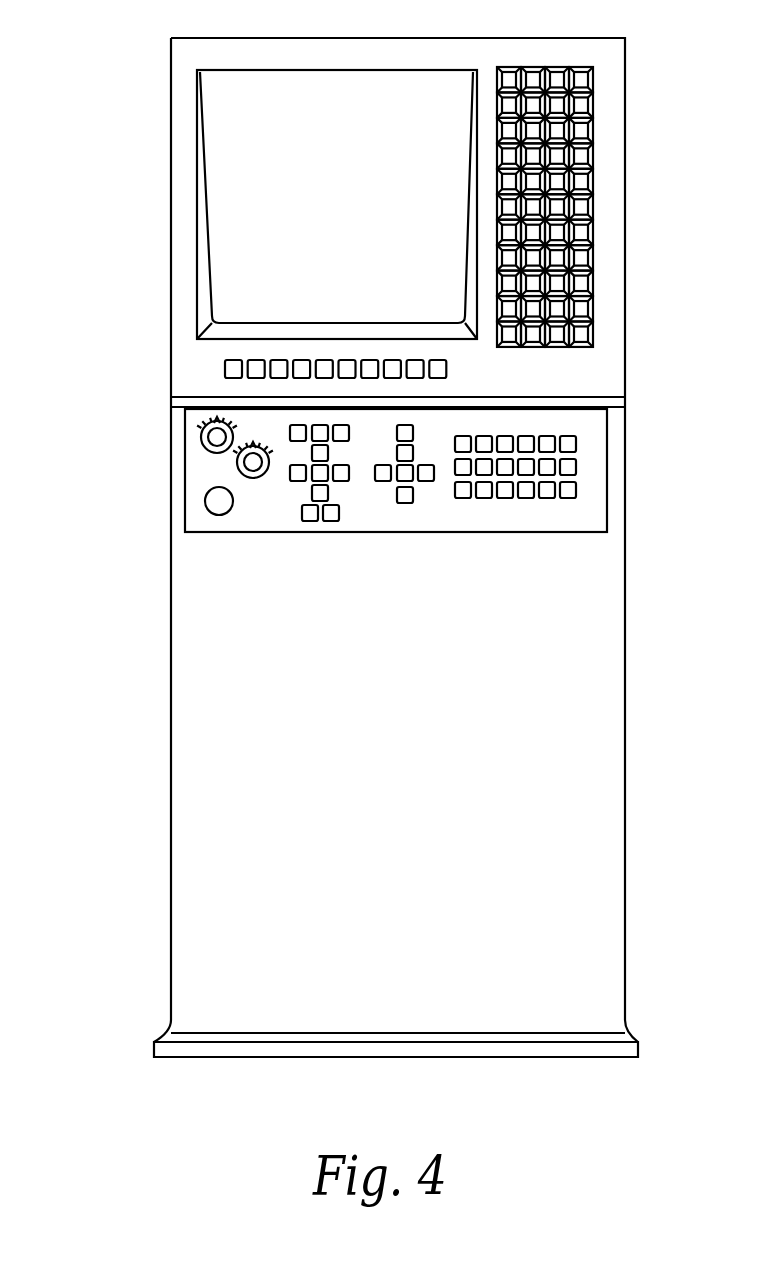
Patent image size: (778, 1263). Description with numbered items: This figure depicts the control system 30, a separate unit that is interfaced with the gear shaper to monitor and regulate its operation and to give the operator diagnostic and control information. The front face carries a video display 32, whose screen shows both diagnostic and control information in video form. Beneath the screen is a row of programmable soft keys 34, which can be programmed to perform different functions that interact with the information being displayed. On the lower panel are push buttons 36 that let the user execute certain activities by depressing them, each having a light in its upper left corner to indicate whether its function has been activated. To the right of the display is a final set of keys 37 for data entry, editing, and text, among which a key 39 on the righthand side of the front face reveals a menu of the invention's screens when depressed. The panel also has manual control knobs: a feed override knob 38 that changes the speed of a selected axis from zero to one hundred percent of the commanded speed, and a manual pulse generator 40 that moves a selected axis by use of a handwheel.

The control system 30 is at (118, 115).
The video display 32 is at (227, 225).
The soft keys 34 is at (223, 370).
The push buttons 36 is at (358, 523).
The keys 37 is at (600, 207).
The feed override knob 38 is at (238, 466).
The key 39 is at (592, 308).
The manual pulse generator 40 is at (201, 443).